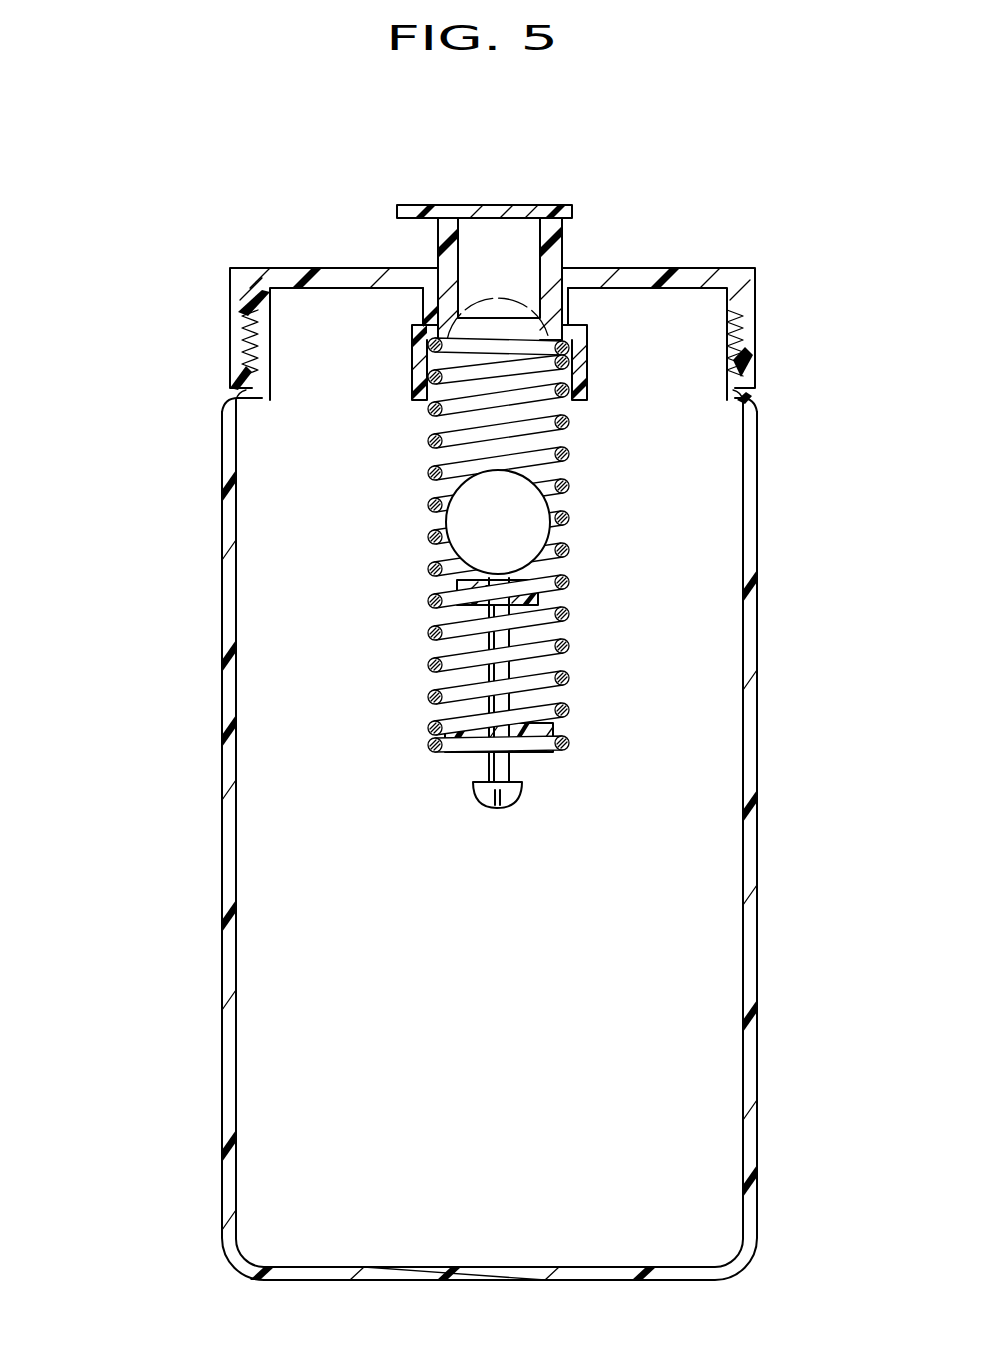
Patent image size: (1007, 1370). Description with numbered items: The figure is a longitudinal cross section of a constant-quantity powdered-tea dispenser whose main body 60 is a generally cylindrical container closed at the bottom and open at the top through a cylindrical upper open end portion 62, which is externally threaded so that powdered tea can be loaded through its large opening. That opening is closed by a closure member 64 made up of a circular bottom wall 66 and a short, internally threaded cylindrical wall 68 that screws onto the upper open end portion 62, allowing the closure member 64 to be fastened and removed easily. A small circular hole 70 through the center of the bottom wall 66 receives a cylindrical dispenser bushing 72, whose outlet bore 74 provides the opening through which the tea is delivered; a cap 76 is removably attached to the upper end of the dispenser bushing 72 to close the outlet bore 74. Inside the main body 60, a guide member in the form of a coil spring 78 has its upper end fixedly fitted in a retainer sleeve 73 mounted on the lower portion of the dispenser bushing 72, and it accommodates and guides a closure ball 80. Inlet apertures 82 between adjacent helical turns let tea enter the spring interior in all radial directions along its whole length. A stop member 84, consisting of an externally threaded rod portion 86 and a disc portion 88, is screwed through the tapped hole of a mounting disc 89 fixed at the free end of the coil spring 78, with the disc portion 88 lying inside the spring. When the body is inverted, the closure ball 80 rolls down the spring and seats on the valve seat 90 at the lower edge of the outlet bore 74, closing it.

The main body 60 is at (783, 818).
The upper open end portion 62 is at (700, 312).
The closure member 64 is at (554, 313).
The bottom wall 66 is at (607, 270).
The cylindrical wall 68 is at (747, 335).
The circular hole 70 is at (438, 265).
The dispenser bushing 72 is at (552, 258).
The retainer sleeve 73 is at (412, 360).
The outlet bore 74 is at (537, 230).
The cap 76 is at (467, 210).
The coil spring 78 is at (386, 585).
The closure ball 80 is at (537, 510).
The inlet apertures 82 is at (447, 420).
The stop member 84 is at (303, 693).
The rod portion 86 is at (497, 672).
The disc portion 88 is at (457, 607).
The mounting disc 89 is at (537, 745).
The valve seat 90 is at (575, 378).